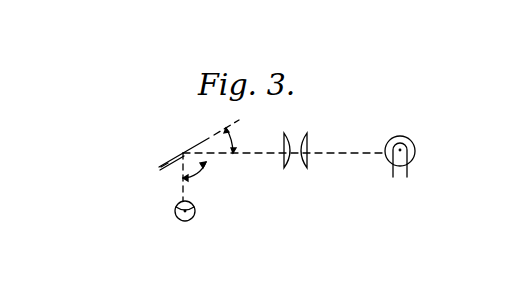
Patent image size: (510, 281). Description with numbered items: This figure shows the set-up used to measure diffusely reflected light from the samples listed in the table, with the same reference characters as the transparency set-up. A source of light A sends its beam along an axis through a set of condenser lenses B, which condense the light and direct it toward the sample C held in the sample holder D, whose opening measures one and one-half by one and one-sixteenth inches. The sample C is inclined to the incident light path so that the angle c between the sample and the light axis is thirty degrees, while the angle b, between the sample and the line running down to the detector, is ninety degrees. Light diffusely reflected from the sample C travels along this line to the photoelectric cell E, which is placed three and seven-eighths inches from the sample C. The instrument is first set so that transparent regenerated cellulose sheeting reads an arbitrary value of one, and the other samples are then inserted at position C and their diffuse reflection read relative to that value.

The source of light A is at (401, 180).
The set of condenser lenses B is at (297, 173).
The sample C is at (183, 153).
The sample holder D is at (168, 170).
The photoelectric cell E is at (184, 222).
The angle b is at (194, 171).
The angle c is at (232, 140).